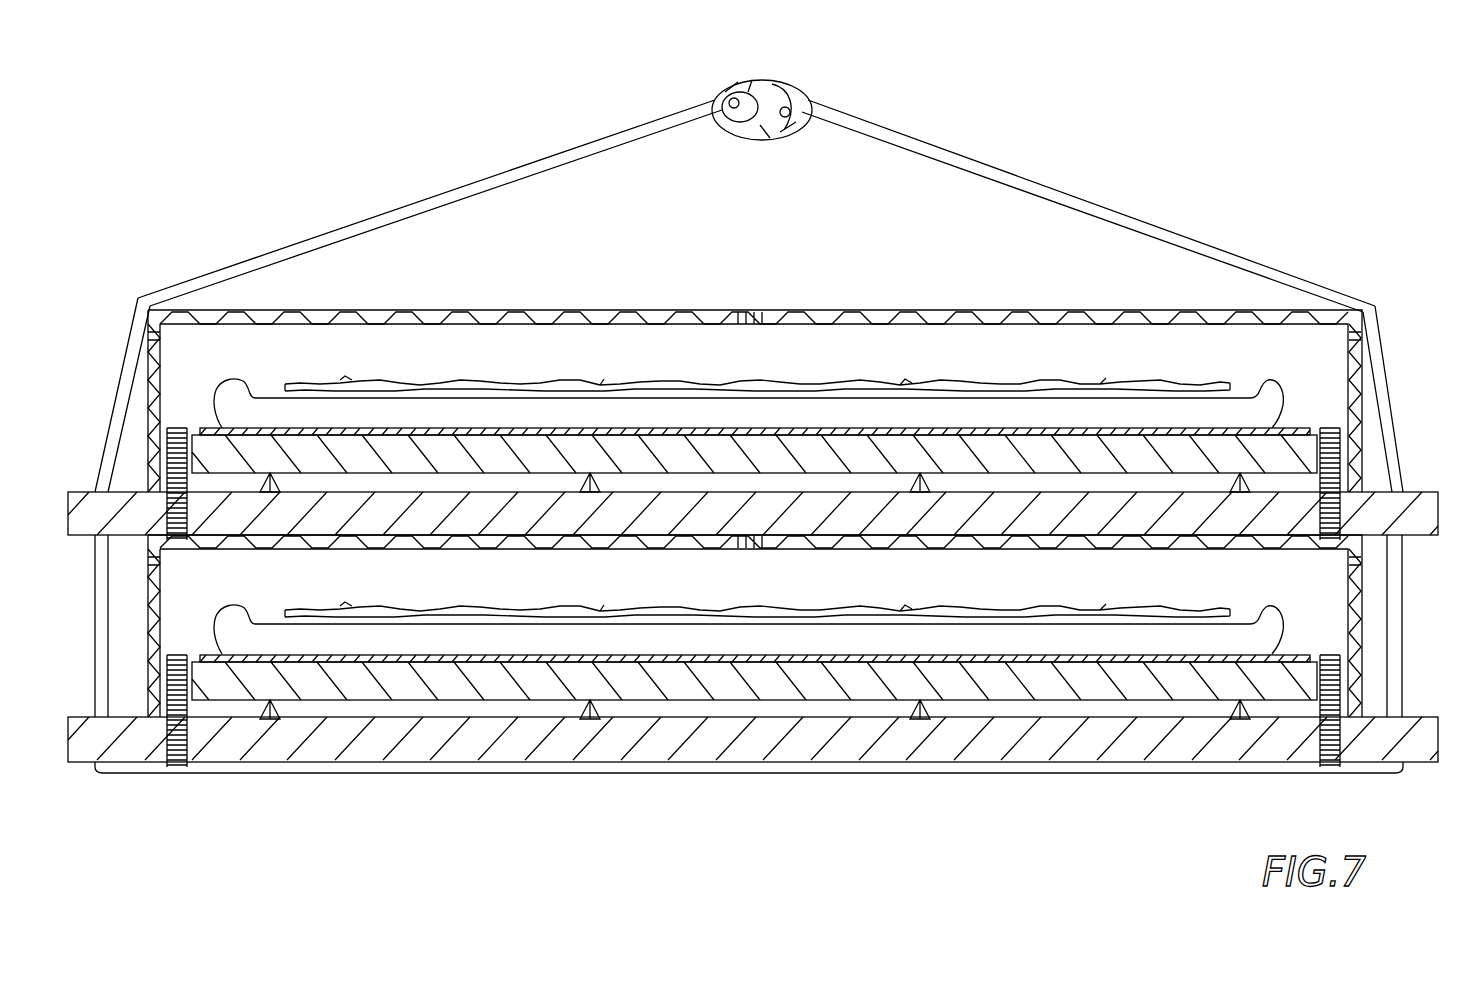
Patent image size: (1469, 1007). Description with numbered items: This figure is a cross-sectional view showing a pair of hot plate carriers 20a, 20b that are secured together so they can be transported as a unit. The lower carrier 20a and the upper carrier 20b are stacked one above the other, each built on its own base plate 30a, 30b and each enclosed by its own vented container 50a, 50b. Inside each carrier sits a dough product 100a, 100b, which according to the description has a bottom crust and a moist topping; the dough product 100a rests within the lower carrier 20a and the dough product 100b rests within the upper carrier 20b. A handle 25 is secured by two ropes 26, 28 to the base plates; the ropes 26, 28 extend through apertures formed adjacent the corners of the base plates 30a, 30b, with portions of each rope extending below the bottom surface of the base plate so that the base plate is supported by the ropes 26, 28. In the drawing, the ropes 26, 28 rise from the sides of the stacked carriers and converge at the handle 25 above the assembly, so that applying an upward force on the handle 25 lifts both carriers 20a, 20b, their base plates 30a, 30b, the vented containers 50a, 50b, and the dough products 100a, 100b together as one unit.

The carrier 20a is at (803, 681).
The carrier 20b is at (755, 360).
The handle 25 is at (764, 100).
The rope 26 is at (1040, 190).
The rope 28 is at (380, 225).
The base plate 30a is at (1370, 742).
The base plate 30b is at (1405, 520).
The vented container 50a is at (1358, 640).
The vented container 50b is at (900, 312).
The dough product 100a is at (240, 635).
The dough product 100b is at (250, 410).